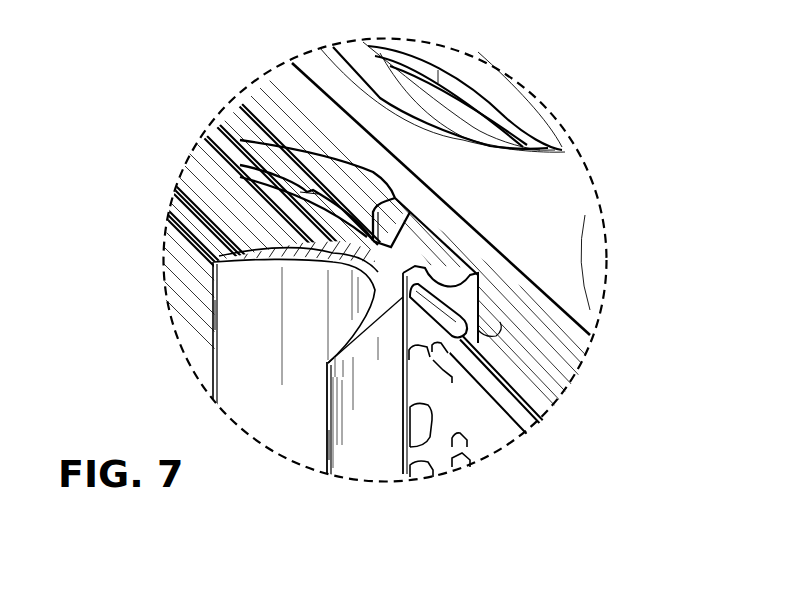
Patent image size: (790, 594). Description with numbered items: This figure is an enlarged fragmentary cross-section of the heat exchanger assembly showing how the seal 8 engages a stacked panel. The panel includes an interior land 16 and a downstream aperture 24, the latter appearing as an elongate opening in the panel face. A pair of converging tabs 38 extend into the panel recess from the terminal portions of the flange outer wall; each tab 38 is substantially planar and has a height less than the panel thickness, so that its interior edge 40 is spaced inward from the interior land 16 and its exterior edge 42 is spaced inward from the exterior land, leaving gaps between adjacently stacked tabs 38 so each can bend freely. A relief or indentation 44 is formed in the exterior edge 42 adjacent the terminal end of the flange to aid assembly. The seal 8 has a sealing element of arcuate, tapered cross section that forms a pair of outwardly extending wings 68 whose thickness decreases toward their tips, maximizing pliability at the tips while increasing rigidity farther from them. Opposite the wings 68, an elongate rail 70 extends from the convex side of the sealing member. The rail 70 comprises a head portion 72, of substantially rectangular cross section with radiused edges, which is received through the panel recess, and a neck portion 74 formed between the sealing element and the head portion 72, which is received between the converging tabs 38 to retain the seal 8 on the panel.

The seal 8 is at (238, 389).
The interior land 16 is at (568, 168).
The downstream aperture 24 is at (471, 100).
The converging tabs 38 is at (410, 318).
The interior edge 40 is at (451, 316).
The exterior edge 42 is at (412, 348).
The relief or indentation 44 is at (440, 370).
The wings 68 is at (213, 311).
The rail 70 is at (248, 150).
The head portion 72 is at (340, 157).
The neck portion 74 is at (300, 186).